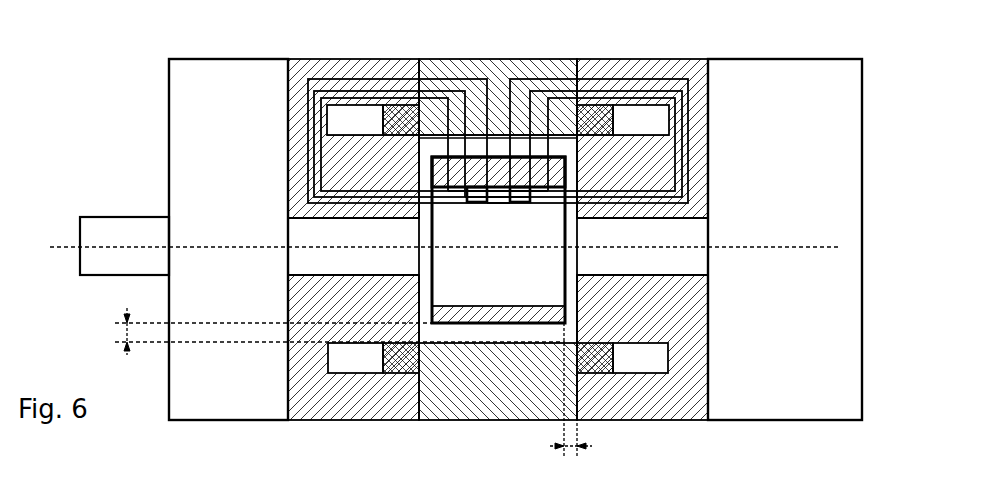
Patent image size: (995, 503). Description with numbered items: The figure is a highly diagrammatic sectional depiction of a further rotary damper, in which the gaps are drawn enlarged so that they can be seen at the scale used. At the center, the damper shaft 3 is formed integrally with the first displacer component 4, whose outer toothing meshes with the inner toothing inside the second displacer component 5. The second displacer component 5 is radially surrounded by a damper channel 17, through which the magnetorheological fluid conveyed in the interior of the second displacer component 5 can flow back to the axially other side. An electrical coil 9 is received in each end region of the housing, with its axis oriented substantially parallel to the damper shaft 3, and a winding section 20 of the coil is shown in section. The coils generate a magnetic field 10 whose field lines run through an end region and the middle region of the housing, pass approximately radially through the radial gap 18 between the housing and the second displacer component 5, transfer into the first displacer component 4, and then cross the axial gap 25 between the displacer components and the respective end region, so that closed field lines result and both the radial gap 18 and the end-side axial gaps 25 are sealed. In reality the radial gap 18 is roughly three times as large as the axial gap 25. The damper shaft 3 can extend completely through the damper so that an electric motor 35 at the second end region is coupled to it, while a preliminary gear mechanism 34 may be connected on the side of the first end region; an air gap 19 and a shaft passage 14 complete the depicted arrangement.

The damper shaft 3 is at (382, 218).
The first displacer component 4 is at (485, 288).
The second displacer component 5 is at (520, 315).
The electrical coil 9 is at (357, 113).
The magnetic field 10 is at (530, 78).
The shaft 14 is at (368, 248).
The damper channel 17 is at (477, 338).
The radial gap 18 is at (123, 332).
The air gap 19 is at (487, 245).
The winding section 20 is at (405, 112).
The axial gap 25 is at (570, 447).
The preliminary gear mechanism 34 is at (238, 77).
The electric motor 35 is at (760, 78).